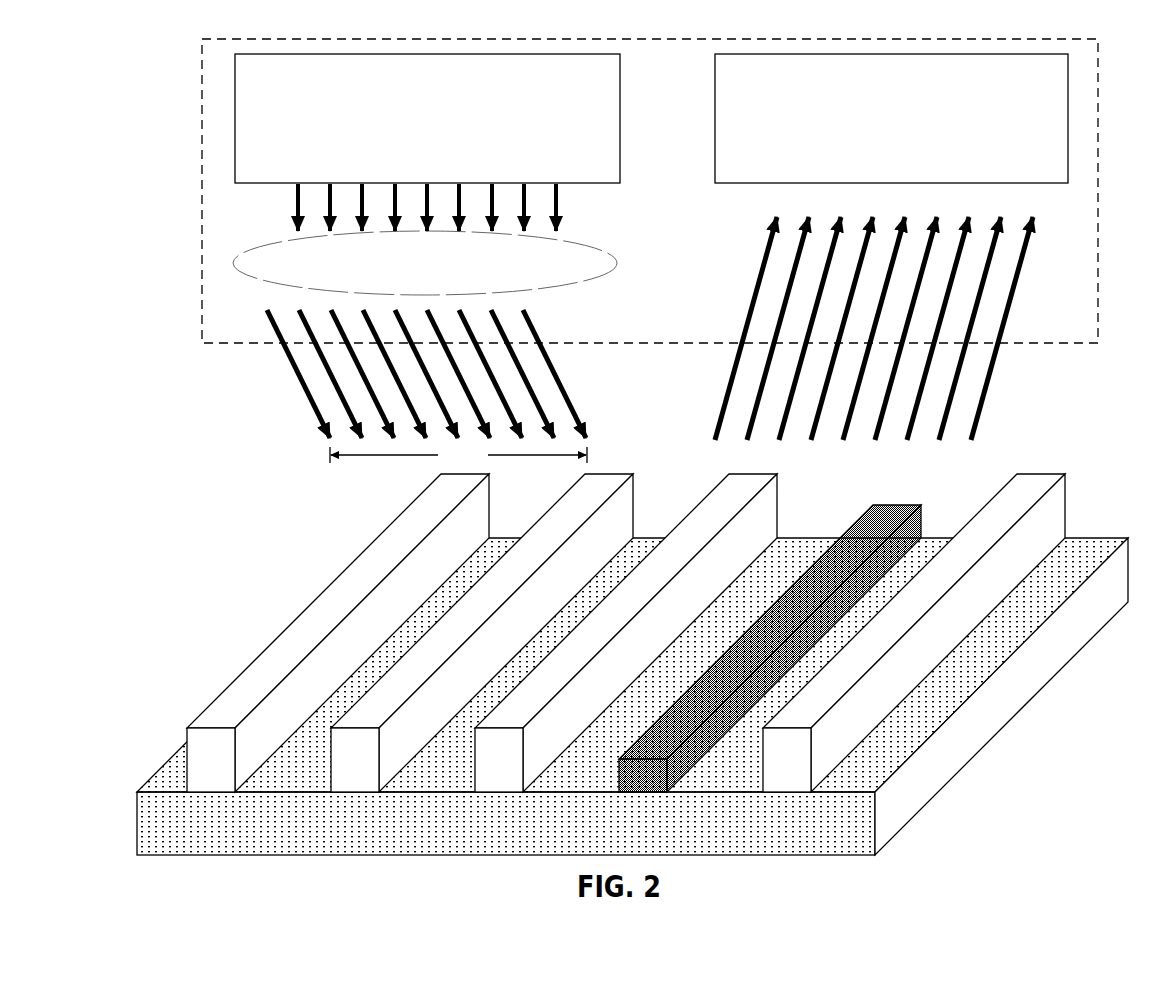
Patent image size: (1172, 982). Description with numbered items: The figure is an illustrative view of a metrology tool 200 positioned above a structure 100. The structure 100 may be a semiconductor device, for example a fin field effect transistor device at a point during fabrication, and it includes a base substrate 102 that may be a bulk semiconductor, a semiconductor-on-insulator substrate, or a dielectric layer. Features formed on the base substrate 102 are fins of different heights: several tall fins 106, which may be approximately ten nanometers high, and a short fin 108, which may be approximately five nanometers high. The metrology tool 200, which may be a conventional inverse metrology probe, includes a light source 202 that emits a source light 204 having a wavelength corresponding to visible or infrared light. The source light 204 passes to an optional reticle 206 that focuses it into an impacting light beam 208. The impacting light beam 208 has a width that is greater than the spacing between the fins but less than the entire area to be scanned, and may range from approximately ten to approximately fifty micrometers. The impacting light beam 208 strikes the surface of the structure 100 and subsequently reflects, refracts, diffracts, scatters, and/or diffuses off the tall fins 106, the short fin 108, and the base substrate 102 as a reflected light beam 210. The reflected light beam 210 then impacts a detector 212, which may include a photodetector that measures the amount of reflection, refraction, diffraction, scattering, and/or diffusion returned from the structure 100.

The structure 100 is at (632, 657).
The base substrate 102 is at (632, 696).
The tall fins 106 is at (762, 518).
The short fins 108 is at (908, 535).
The metrology tool 200 is at (200, 214).
The light source 202 is at (427, 118).
The source light 204 is at (589, 209).
The reticle 206 is at (425, 263).
The impacting light beam 208 is at (280, 402).
The reflected light beam 210 is at (712, 389).
The detector 212 is at (891, 118).